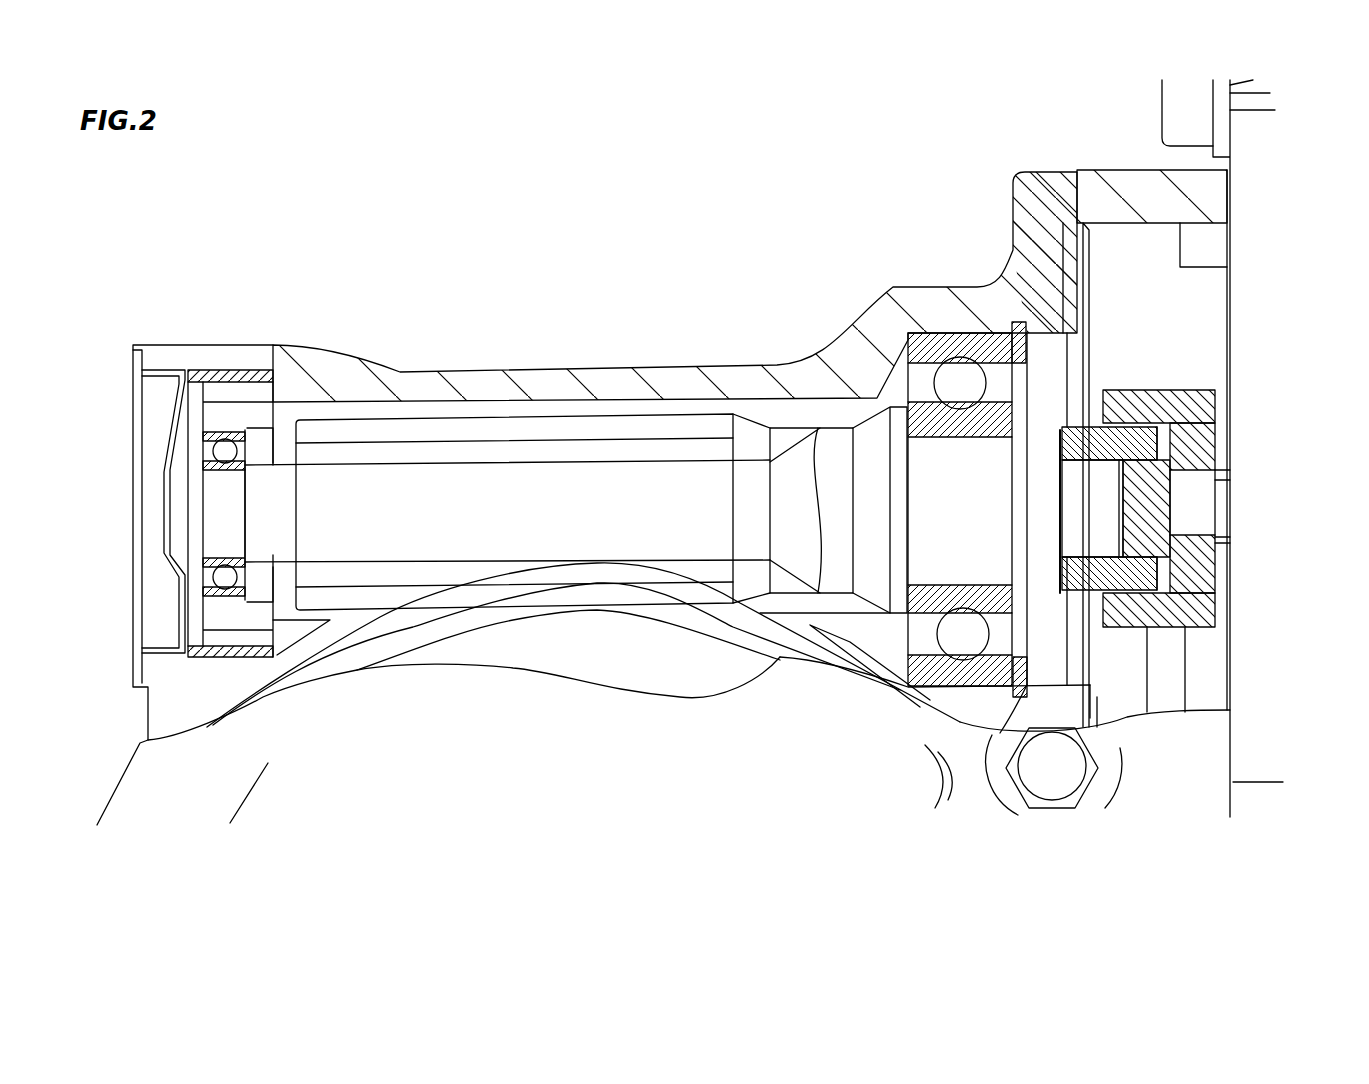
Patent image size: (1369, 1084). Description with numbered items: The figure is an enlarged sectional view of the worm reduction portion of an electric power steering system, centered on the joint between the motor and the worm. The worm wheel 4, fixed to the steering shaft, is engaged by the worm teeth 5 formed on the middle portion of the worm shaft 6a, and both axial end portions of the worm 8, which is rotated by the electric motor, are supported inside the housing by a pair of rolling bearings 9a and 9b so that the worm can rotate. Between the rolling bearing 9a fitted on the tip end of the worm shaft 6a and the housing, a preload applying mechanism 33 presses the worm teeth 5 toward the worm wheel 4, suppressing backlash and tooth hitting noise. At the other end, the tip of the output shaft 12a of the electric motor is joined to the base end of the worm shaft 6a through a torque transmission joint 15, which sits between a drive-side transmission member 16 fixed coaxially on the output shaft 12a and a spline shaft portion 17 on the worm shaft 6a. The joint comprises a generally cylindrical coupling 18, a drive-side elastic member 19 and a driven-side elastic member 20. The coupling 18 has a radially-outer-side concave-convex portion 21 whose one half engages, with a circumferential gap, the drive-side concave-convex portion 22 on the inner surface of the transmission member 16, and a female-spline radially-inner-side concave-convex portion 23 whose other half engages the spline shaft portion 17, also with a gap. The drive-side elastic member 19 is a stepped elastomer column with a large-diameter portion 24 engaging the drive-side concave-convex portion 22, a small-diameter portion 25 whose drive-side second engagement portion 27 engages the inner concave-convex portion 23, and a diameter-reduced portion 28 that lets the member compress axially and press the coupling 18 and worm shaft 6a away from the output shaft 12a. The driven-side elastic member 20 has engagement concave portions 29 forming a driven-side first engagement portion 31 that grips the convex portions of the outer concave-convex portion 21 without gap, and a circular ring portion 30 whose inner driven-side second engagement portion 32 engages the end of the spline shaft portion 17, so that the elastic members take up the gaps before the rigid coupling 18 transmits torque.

The worm wheel 4 is at (510, 628).
The worm teeth 5 is at (410, 465).
The worm shaft 6a is at (355, 470).
The worm 8 is at (764, 474).
The rolling bearing 9a is at (225, 578).
The rolling bearing 9b is at (963, 634).
The output shaft 12a is at (1200, 512).
The torque transmission joint 15 is at (1115, 418).
The drive-side transmission member 16 is at (1200, 395).
The spline shaft portion 17 is at (1003, 320).
The coupling 18 is at (1127, 627).
The drive-side elastic member 19 is at (1215, 478).
The driven-side elastic member 20 is at (1027, 743).
The radially-outer-side concave-convex portion 21 is at (1173, 650).
The drive-side concave-convex portion 22 is at (1160, 440).
The radially-inner-side concave-convex portion 23 is at (1120, 440).
The large-diameter portion 24 is at (1187, 560).
The small-diameter portion 25 is at (1140, 490).
The drive-side second engagement portion 27 is at (1195, 628).
The diameter-reduced portion 28 is at (1185, 548).
The engagement concave portions 29 is at (1062, 432).
The circular ring portion 30 is at (985, 740).
The driven-side first engagement portion 31 is at (1085, 300).
The driven-side second engagement portion 32 is at (972, 345).
The preload applying mechanism 33 is at (215, 415).